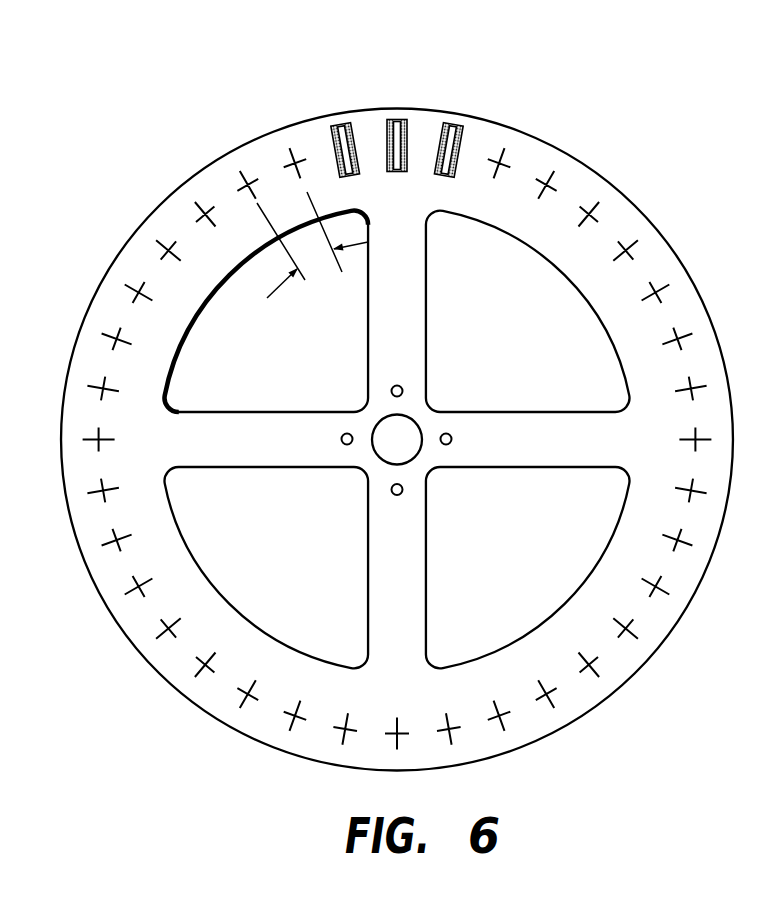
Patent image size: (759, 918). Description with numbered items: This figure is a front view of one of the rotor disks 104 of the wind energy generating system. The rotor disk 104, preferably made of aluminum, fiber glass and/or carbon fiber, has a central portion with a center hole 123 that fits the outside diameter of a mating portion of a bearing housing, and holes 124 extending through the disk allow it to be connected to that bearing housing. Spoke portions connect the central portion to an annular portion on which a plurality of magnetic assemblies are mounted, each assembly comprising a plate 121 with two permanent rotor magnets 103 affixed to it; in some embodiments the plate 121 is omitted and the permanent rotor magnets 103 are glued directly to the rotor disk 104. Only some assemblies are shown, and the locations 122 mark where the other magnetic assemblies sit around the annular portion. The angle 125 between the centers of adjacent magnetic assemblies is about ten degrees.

The permanent rotor magnets 103 is at (339, 122).
The rotor disk 104 is at (588, 154).
The plate 121 is at (398, 118).
The locations of the other magnetic assemblies 122 is at (660, 292).
The center hole 123 is at (413, 421).
The holes 124 is at (341, 432).
The angle 125 is at (314, 268).